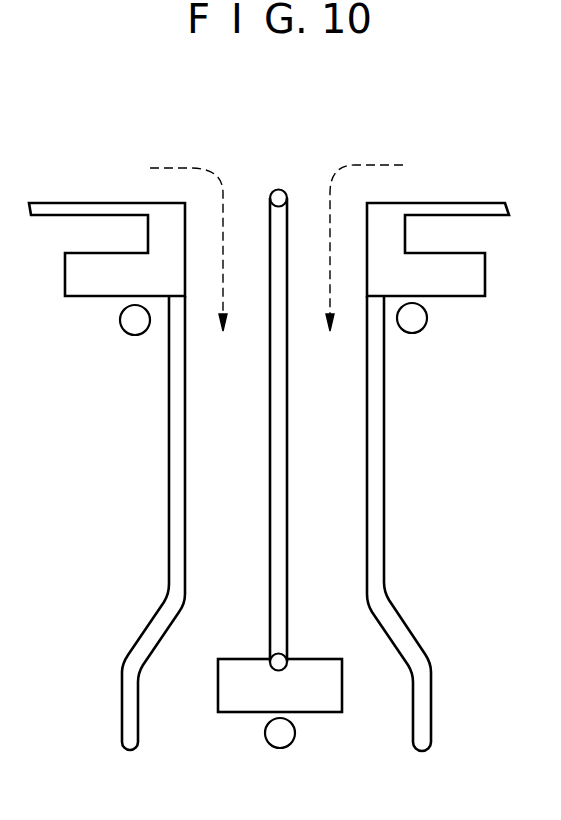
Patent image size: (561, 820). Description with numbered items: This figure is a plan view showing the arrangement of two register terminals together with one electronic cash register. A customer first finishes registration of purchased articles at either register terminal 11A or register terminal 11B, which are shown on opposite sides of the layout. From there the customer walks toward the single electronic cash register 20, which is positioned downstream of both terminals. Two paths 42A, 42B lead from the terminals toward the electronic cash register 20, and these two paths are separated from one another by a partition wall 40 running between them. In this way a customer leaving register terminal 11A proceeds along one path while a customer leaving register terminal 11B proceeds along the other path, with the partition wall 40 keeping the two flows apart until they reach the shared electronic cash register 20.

The register terminal 11A is at (83, 287).
The register terminal 11B is at (472, 287).
The path 42A is at (205, 425).
The path 42B is at (353, 442).
The partition wall 40 is at (270, 506).
The electronic cash register 20 is at (327, 702).